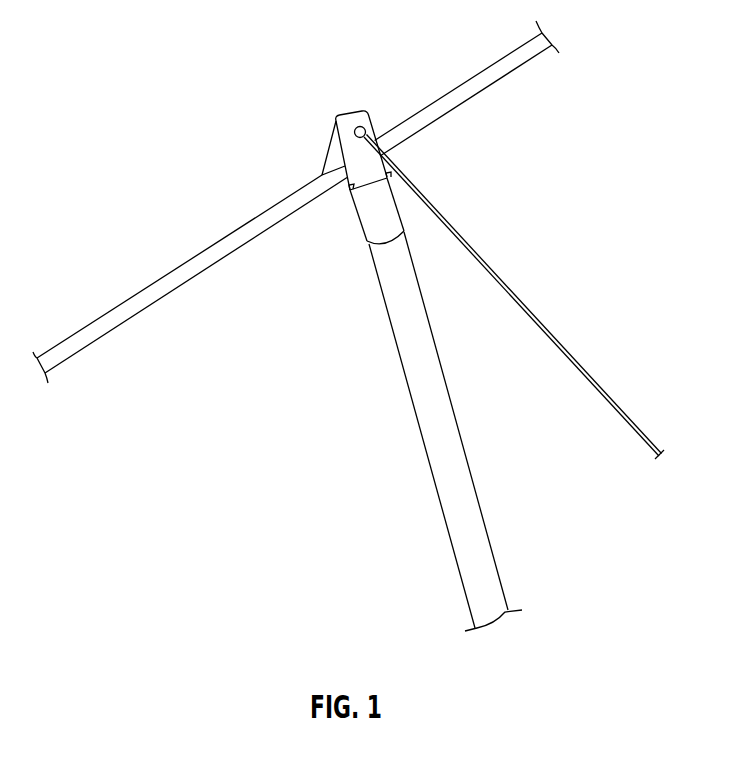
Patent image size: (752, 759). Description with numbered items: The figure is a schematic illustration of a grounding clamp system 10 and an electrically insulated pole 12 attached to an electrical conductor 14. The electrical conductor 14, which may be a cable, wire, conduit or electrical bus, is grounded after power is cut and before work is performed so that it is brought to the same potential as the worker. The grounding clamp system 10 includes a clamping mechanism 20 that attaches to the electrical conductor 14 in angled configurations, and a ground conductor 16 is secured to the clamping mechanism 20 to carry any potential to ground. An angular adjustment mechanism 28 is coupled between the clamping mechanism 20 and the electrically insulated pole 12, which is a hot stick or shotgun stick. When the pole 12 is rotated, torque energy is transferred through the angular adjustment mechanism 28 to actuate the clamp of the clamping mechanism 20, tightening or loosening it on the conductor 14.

The grounding clamp system 10 is at (127, 103).
The electrically insulated pole 12 is at (440, 442).
The electrical conductor 14 is at (172, 270).
The ground conductor 16 is at (547, 330).
The clamping mechanism 20 is at (345, 113).
The angular adjustment mechanism 28 is at (364, 223).